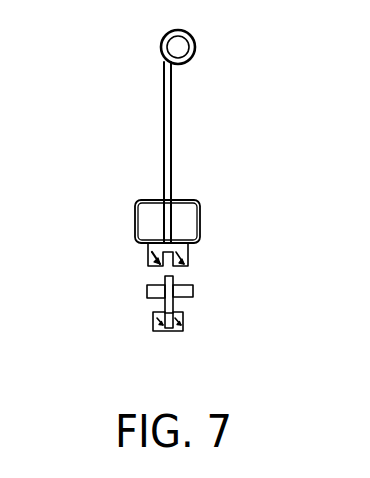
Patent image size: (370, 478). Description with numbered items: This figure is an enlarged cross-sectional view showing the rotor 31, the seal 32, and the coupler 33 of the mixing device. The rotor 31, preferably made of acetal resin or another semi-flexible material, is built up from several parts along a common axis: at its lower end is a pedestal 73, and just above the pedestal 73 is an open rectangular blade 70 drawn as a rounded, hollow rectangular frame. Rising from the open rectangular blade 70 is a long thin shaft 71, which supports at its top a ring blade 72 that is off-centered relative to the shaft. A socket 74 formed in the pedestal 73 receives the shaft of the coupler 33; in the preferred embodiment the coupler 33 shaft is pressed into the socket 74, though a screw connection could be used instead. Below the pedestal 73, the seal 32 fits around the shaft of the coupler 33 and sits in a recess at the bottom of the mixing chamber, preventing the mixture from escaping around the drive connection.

The rotor 31 is at (188, 126).
The seal 32 is at (147, 288).
The coupler 33 is at (153, 323).
The open rectangular blade 70 is at (140, 201).
The thin shaft 71 is at (163, 141).
The ring blade 72 is at (160, 40).
The pedestal 73 is at (190, 243).
The socket 74 is at (173, 262).